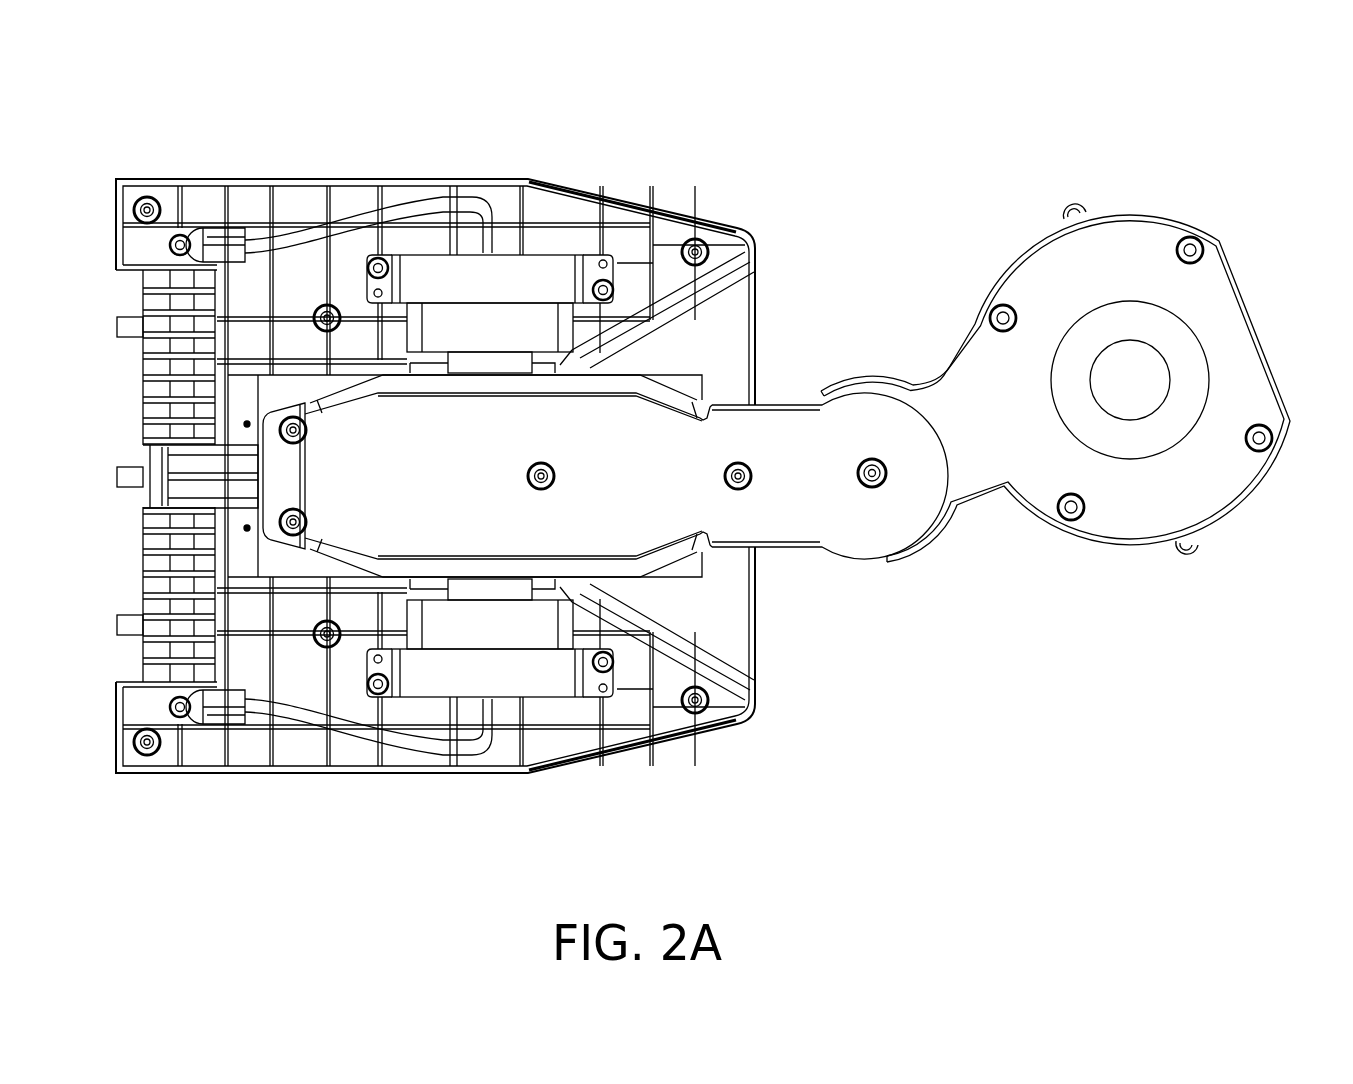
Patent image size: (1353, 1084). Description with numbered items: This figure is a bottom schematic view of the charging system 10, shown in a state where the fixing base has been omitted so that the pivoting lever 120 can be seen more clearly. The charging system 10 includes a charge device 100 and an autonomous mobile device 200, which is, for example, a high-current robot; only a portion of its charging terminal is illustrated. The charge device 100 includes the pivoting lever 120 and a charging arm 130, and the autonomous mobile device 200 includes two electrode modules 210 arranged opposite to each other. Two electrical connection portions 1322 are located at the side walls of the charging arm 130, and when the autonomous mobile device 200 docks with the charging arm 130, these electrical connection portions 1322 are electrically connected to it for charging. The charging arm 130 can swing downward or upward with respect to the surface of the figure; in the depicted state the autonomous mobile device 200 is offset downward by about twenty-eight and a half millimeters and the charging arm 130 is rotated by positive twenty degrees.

The charging system 10 is at (1258, 858).
The charge device 100 is at (1164, 99).
The pivoting lever 120 is at (1116, 234).
The charging arm 130 is at (840, 440).
The electrical connection portions 1322 is at (543, 383).
The autonomous mobile device 200 is at (734, 99).
The electrode modules 210 is at (497, 363).